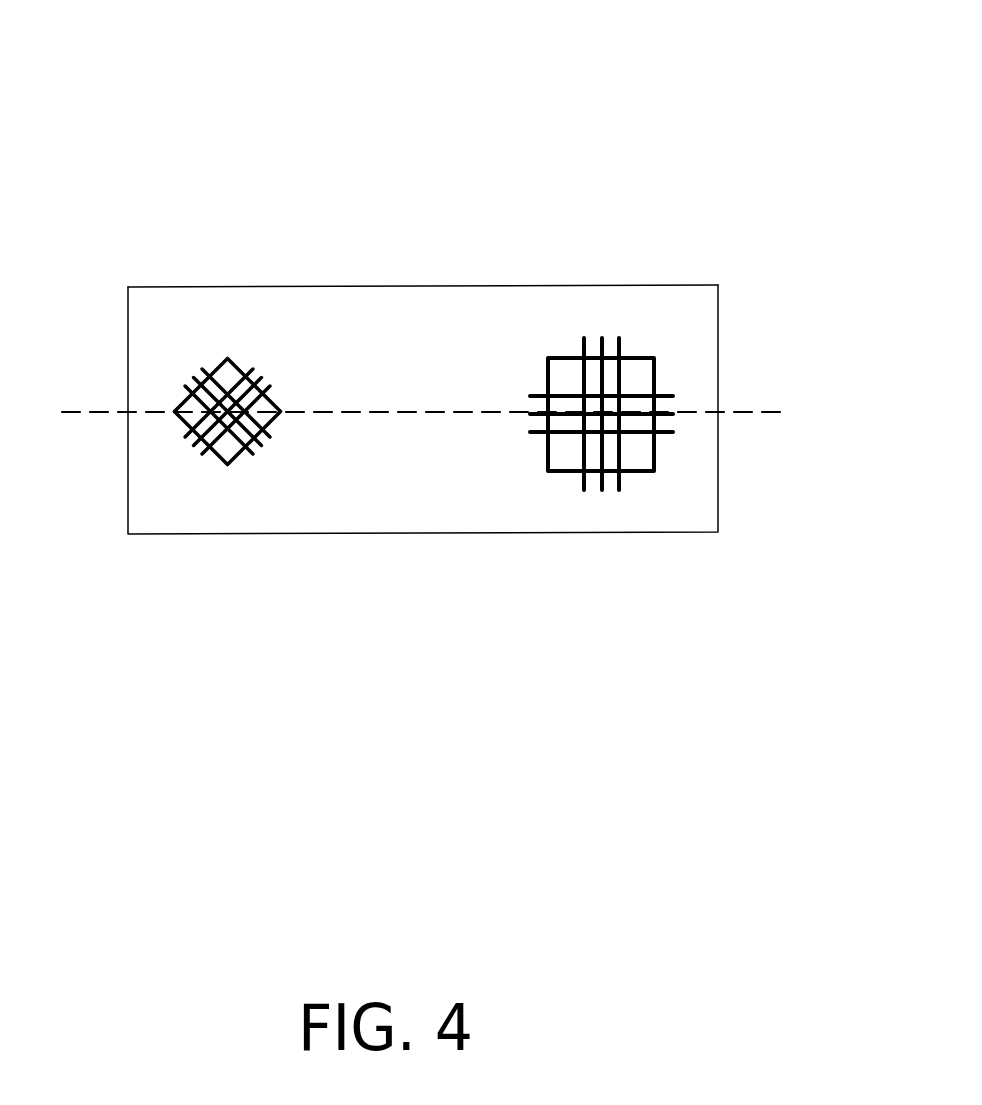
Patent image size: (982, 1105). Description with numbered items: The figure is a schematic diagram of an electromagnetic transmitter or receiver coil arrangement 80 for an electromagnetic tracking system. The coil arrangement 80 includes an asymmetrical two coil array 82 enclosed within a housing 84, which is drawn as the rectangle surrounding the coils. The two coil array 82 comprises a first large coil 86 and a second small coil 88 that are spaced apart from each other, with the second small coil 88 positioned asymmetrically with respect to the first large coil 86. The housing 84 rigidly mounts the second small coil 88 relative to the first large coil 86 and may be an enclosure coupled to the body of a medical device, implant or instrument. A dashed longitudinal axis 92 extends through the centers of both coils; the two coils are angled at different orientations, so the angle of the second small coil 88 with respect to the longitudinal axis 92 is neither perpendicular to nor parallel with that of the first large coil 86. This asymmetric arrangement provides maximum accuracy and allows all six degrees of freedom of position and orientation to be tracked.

The electromagnetic transmitter or receiver coil arrangement 80 is at (408, 130).
The asymmetrical two coil array 82 is at (353, 313).
The housing 84 is at (522, 285).
The first large coil 86 is at (637, 363).
The second small coil 88 is at (222, 357).
The longitudinal axis 92 is at (464, 409).